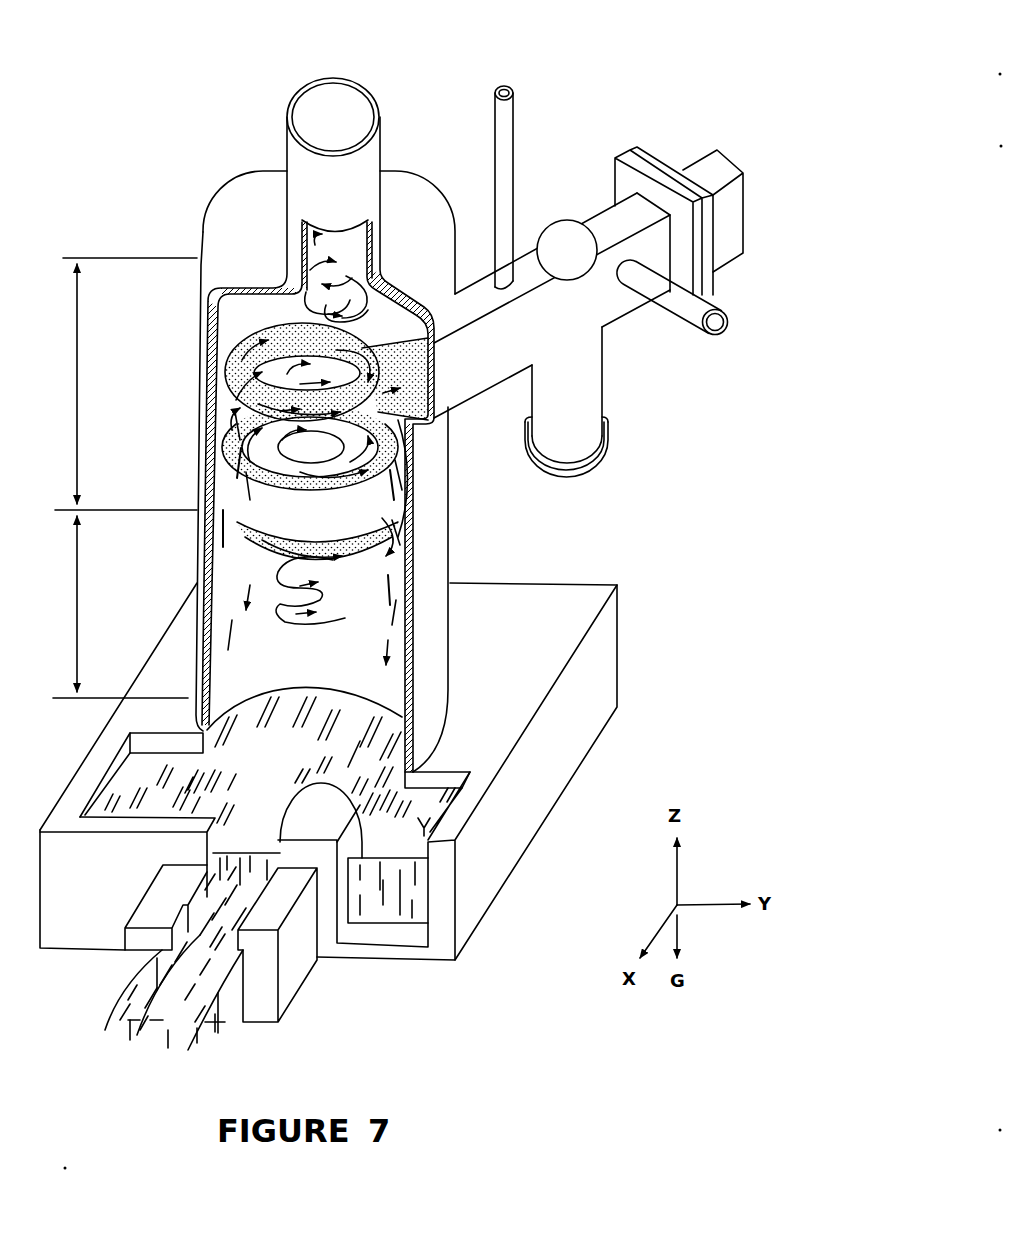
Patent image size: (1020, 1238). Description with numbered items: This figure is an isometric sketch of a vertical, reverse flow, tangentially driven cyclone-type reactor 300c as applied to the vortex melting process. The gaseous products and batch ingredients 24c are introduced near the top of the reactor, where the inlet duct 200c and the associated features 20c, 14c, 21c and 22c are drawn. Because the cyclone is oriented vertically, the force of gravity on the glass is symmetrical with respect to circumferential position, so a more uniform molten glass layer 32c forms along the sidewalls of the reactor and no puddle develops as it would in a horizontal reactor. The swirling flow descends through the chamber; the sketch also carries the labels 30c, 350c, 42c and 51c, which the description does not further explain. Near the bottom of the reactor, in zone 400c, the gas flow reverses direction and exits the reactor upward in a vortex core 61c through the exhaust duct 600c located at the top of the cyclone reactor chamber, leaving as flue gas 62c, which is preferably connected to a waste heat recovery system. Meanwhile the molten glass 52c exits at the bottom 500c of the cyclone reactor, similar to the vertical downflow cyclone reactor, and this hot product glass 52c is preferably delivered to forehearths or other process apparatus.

The vortex melter vessel 300c is at (262, 176).
The exhaust duct 600c is at (333, 155).
The flue gas 62c is at (333, 133).
The vortex core 61c is at (336, 278).
The batch feed tube 20c is at (508, 72).
The tangential inlet duct 200c is at (552, 305).
The burner / feeder assembly 14c is at (748, 201).
The fuel supply tube 21c is at (740, 339).
The combustion air inlet 22c is at (567, 484).
The molten glass layer 32c is at (324, 376).
The gaseous products and batch ingredients 24c is at (319, 409).
The vortex core 30c is at (315, 470).
The combustion zone length 350c is at (121, 384).
The zone 400c is at (116, 607).
The melt surface 42c is at (304, 701).
The bottom of the cyclone reactor 500c is at (280, 761).
The discharge channel flow 51c is at (228, 900).
The molten glass 52c is at (178, 960).